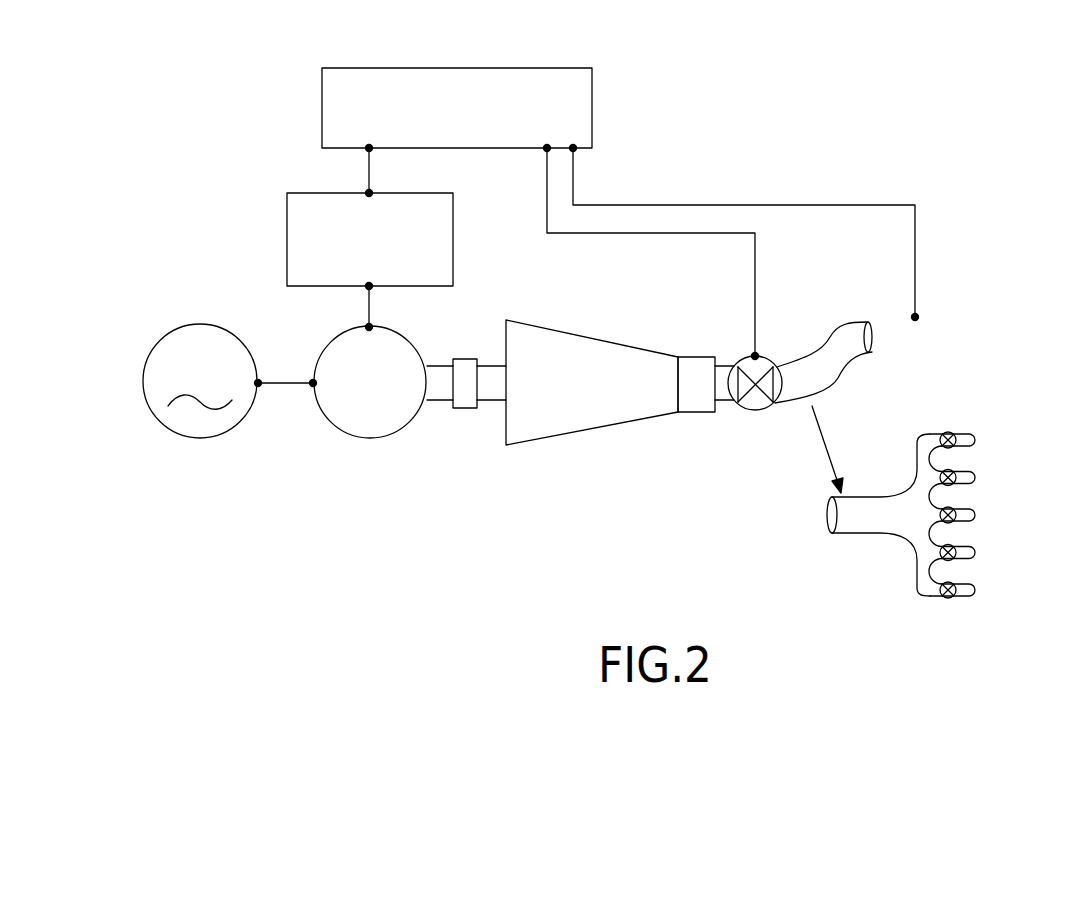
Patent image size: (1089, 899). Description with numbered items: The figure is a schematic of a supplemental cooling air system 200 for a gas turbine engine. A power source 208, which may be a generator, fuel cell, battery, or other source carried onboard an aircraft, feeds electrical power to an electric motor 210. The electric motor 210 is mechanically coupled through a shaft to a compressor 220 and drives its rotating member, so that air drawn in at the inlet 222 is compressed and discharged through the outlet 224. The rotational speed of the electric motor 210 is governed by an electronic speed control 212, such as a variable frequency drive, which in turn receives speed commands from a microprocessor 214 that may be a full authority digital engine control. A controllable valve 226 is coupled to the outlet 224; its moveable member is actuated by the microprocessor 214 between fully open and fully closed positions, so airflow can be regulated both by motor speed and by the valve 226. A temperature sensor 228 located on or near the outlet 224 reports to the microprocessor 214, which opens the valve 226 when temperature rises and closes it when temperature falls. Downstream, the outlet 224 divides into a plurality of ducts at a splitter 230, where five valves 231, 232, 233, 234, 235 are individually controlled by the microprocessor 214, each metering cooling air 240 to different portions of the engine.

The supplemental cooling air system 200 is at (744, 90).
The power source 208 is at (143, 368).
The electric motor 210 is at (319, 352).
The electronic speed control 212 is at (287, 209).
The microprocessor 214 is at (322, 100).
The compressor 220 is at (603, 423).
The inlet 222 is at (506, 345).
The outlet 224 is at (716, 360).
The controllable valve 226 is at (751, 420).
The temperature sensor 228 is at (930, 308).
The splitter 230 is at (853, 564).
The valve 231 is at (963, 427).
The valve 232 is at (963, 479).
The valve 233 is at (963, 517).
The valve 234 is at (963, 554).
The valve 235 is at (963, 590).
The cooling air 240 is at (886, 334).